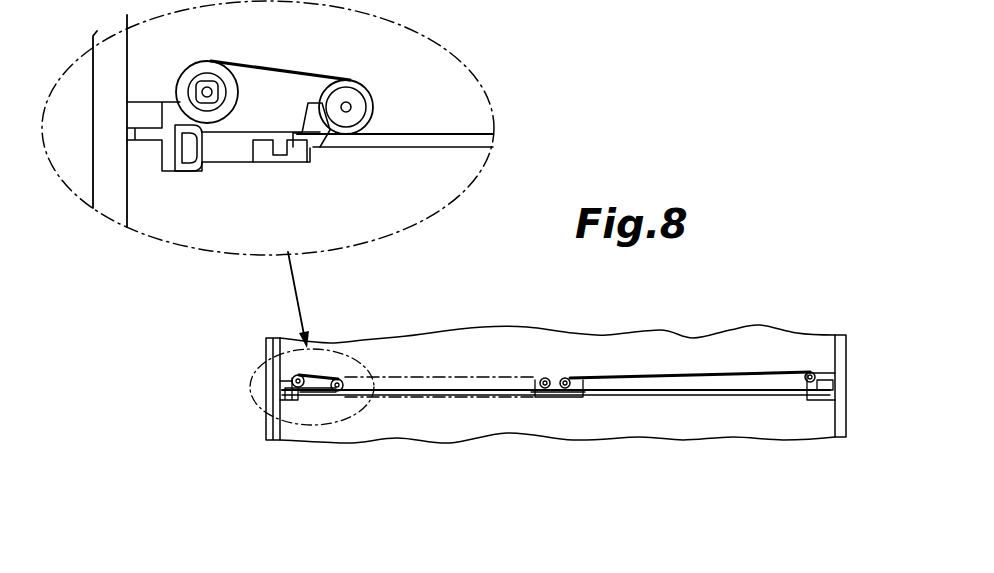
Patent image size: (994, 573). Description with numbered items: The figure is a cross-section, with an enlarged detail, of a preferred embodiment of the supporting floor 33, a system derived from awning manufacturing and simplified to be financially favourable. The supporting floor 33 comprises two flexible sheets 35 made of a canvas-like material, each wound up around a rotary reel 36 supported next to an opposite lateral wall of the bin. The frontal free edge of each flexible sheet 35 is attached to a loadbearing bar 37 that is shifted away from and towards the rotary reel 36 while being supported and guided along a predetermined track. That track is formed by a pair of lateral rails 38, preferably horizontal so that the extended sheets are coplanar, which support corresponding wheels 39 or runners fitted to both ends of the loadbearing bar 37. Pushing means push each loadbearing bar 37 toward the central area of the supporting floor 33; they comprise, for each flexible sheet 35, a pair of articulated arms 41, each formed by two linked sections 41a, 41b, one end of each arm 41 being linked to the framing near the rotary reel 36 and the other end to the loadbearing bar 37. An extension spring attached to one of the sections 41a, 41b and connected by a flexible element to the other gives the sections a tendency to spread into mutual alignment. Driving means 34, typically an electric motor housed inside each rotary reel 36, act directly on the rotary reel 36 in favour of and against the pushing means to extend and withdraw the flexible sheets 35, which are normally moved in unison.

The supporting floor 33 is at (568, 418).
The driving means 34 is at (193, 78).
The flexible sheet 35 is at (280, 72).
The rotary reel 36 is at (225, 84).
The loadbearing bar 37 is at (370, 99).
The lateral rail 38 is at (431, 142).
The wheel 39 is at (372, 116).
The articulated arm 41 is at (267, 185).
The arm section 41a is at (290, 163).
The arm section 41b is at (235, 152).